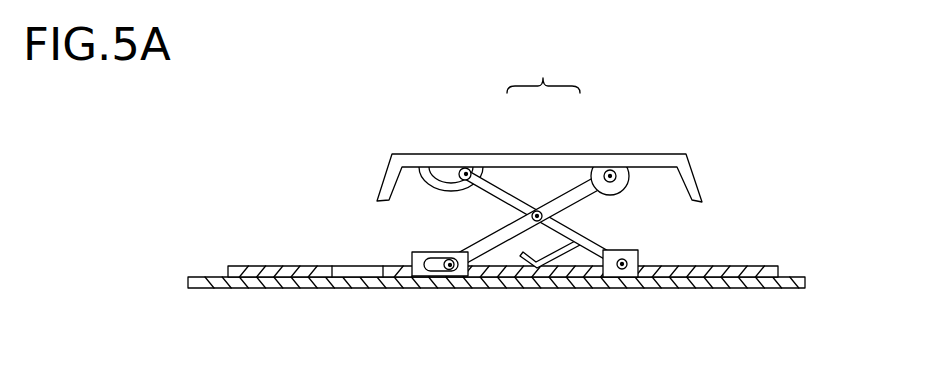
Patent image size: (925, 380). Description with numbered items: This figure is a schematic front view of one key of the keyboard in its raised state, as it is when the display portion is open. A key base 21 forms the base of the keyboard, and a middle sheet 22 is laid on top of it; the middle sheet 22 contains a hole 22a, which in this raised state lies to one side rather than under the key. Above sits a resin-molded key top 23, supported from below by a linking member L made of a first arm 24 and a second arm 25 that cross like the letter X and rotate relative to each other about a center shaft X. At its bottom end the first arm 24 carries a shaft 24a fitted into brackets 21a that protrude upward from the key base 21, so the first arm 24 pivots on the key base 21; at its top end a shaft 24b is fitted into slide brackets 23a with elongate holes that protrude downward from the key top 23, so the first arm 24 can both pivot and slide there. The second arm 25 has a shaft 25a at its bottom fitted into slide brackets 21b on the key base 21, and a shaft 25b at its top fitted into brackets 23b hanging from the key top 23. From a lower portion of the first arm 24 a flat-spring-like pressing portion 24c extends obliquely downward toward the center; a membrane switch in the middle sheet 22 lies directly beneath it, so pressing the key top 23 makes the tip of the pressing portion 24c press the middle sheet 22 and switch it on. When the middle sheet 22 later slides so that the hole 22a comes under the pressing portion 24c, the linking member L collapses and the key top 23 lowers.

The key base 21 is at (794, 284).
The brackets 21a is at (638, 253).
The slide brackets 21b is at (412, 252).
The middle sheet 22 is at (744, 273).
The hole 22a is at (342, 269).
The key top 23 is at (678, 158).
The slide brackets 23a is at (426, 172).
The brackets 23b is at (624, 182).
The first arm 24 is at (495, 189).
The shaft 24a is at (621, 270).
The shaft 24b is at (465, 168).
The pressing portion 24c is at (555, 262).
The second arm 25 is at (572, 194).
The shaft 25a is at (451, 270).
The shaft 25b is at (611, 170).
The center shaft X is at (542, 213).
The linking member L is at (543, 69).